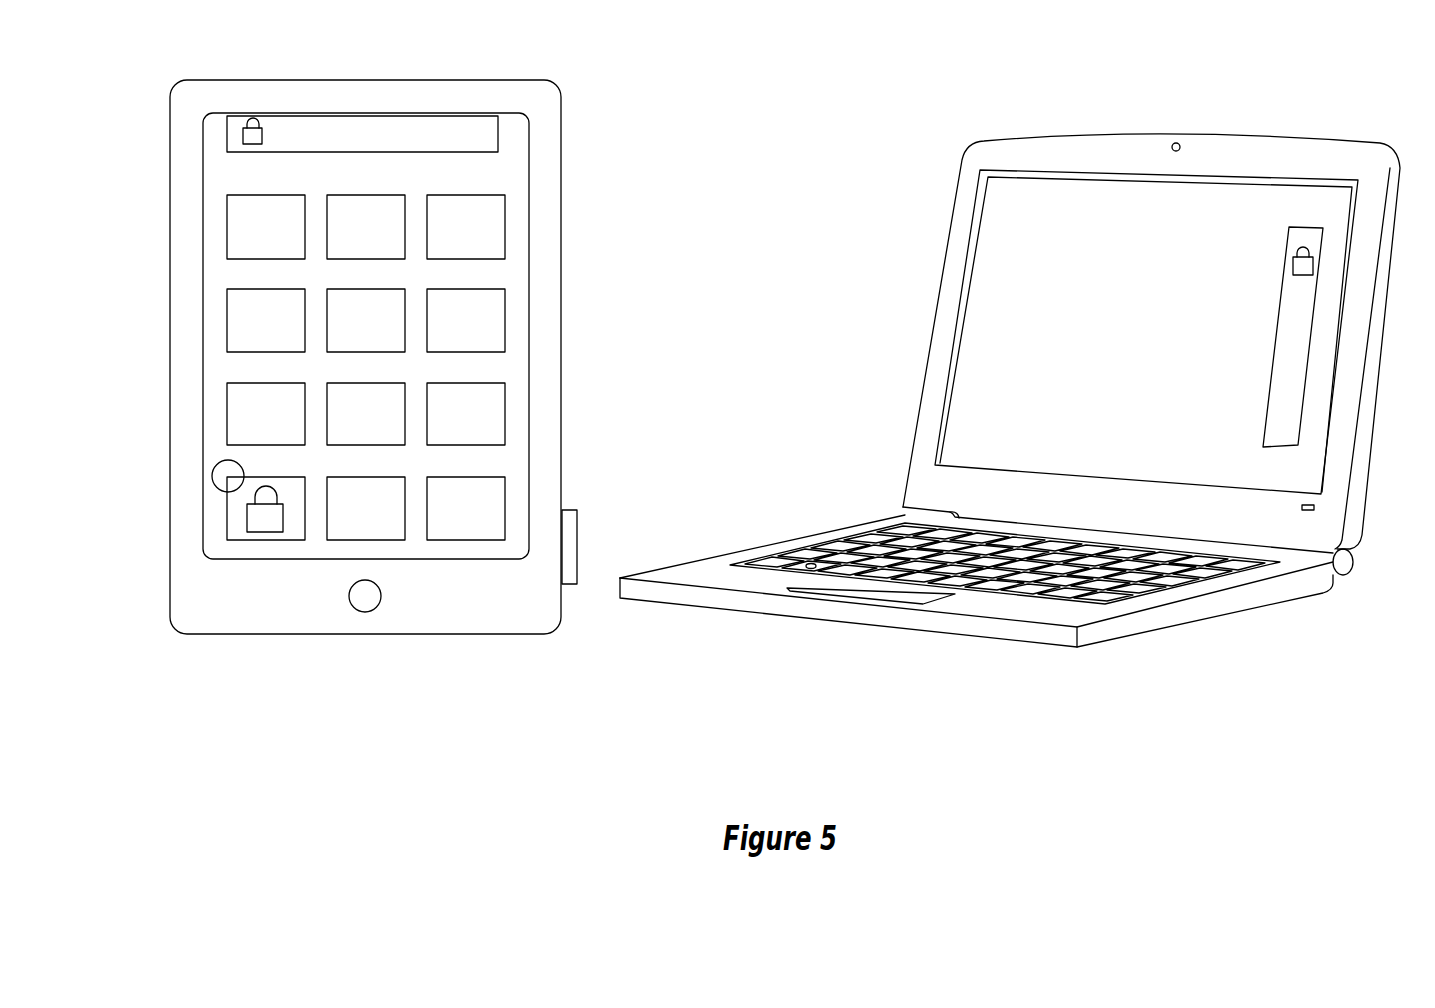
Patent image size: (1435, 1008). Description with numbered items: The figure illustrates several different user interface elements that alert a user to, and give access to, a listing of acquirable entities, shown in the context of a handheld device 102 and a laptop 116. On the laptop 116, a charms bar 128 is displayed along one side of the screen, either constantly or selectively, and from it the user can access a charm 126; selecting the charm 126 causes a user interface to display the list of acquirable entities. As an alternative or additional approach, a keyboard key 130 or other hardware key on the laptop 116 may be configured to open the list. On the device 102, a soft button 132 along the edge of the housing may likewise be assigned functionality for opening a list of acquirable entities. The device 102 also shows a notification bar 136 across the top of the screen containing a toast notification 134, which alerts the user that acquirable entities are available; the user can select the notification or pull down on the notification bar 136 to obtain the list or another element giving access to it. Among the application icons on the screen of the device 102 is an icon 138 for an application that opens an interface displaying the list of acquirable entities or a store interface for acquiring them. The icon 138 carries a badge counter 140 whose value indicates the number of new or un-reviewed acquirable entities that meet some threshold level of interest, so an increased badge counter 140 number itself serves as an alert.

The device 102 is at (482, 80).
The laptop 116 is at (1305, 140).
The charm 126 is at (1313, 263).
The charms bar 128 is at (1303, 295).
The keyboard key 130 is at (803, 561).
The soft button 132 is at (583, 532).
The toast notification 134 is at (255, 126).
The notification bar 136 is at (360, 130).
The icon 138 is at (283, 540).
The badge counter 140 is at (212, 476).